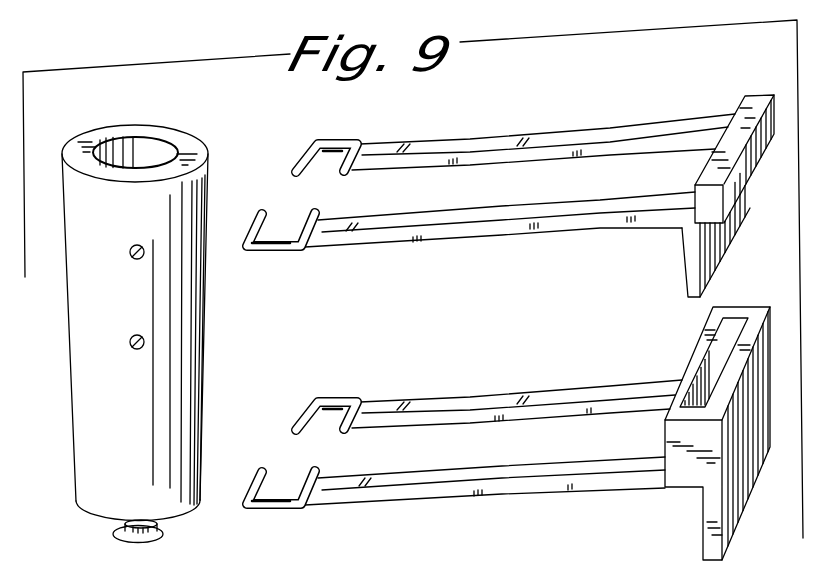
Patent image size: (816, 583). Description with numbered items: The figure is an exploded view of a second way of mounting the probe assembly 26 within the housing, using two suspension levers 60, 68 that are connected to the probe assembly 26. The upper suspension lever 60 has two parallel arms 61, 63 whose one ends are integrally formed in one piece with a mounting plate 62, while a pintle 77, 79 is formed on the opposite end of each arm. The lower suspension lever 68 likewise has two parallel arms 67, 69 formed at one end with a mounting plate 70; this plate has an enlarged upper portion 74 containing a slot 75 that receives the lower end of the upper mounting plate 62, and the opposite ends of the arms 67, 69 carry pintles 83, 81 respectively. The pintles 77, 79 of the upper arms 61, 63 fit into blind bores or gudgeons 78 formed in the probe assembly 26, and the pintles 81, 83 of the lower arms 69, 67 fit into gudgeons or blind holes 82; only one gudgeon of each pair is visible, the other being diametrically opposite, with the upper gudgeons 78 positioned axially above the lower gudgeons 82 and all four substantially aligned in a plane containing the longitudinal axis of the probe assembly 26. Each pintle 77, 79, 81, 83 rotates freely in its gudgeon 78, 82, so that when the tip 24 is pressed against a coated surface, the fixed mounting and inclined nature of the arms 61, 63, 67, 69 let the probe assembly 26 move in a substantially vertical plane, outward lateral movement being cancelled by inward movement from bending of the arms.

The tip 24 is at (152, 541).
The probe assembly 26 is at (67, 507).
The upper suspension lever 60 is at (507, 207).
The arm 61 is at (410, 166).
The mounting plate 62 is at (690, 248).
The arm 63 is at (412, 243).
The arm 67 is at (432, 421).
The lower suspension lever 68 is at (510, 439).
The arm 69 is at (426, 504).
The mounting plate 70 is at (720, 532).
The enlarged upper portion 74 is at (690, 363).
The slot 75 is at (712, 360).
The pintle 77 is at (292, 166).
The gudgeon 78 is at (130, 259).
The pintle 79 is at (270, 213).
The pintle 81 is at (270, 470).
The gudgeon 82 is at (132, 349).
The pintle 83 is at (292, 430).